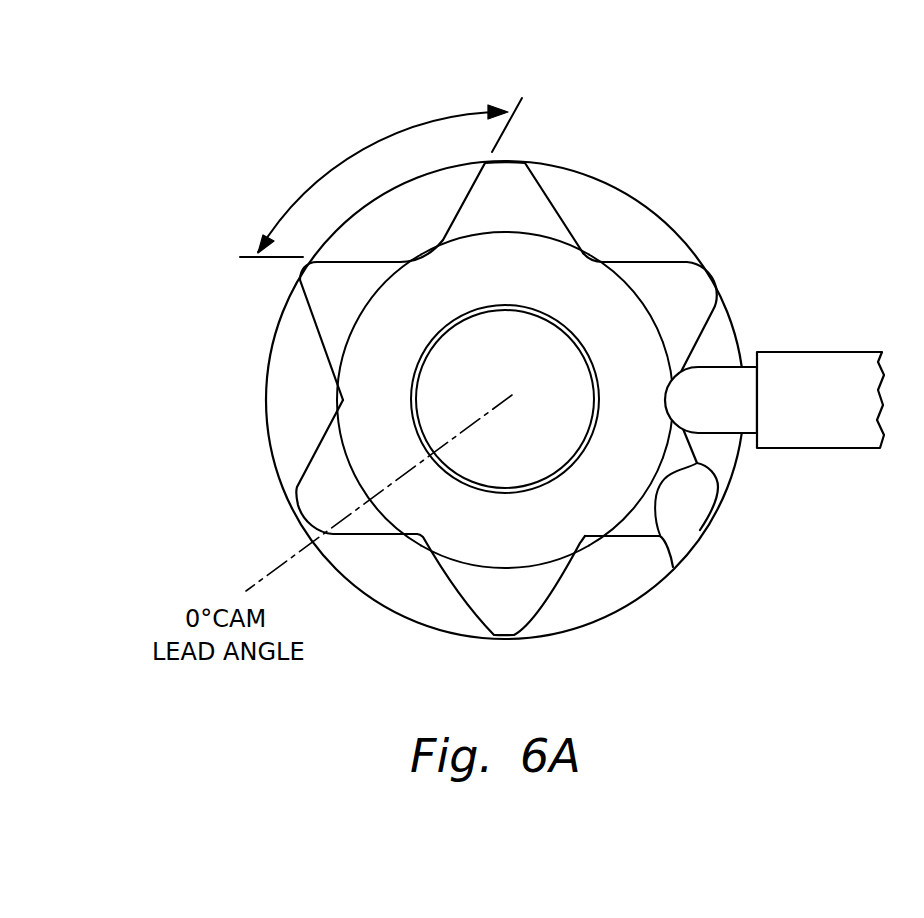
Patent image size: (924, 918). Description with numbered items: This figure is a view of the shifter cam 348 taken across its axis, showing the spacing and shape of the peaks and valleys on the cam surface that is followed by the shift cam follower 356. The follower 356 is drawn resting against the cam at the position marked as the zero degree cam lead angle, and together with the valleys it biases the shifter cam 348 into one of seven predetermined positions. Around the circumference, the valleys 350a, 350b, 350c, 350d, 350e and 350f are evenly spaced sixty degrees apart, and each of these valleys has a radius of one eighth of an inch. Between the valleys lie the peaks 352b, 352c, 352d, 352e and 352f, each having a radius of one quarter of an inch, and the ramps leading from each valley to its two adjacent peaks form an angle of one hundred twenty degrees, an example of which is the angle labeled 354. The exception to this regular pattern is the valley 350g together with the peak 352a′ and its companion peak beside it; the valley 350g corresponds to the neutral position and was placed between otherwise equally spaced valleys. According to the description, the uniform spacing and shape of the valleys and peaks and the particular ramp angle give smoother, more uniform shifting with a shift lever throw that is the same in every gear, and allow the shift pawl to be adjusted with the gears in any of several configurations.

The shifter cam 348 is at (643, 208).
The valley 350a is at (670, 398).
The valley 350b is at (588, 537).
The valley 350c is at (417, 536).
The valley 350d is at (338, 398).
The valley 350e is at (446, 240).
The valley 350f is at (585, 257).
The valley 350g is at (700, 512).
The peak 352a′ is at (719, 487).
The peak 352b is at (505, 640).
The peak 352c is at (299, 514).
The peak 352d is at (304, 268).
The peak 352e is at (511, 164).
The peak 352f is at (717, 284).
The angle 354 is at (366, 153).
The shift cam follower 356 is at (743, 367).